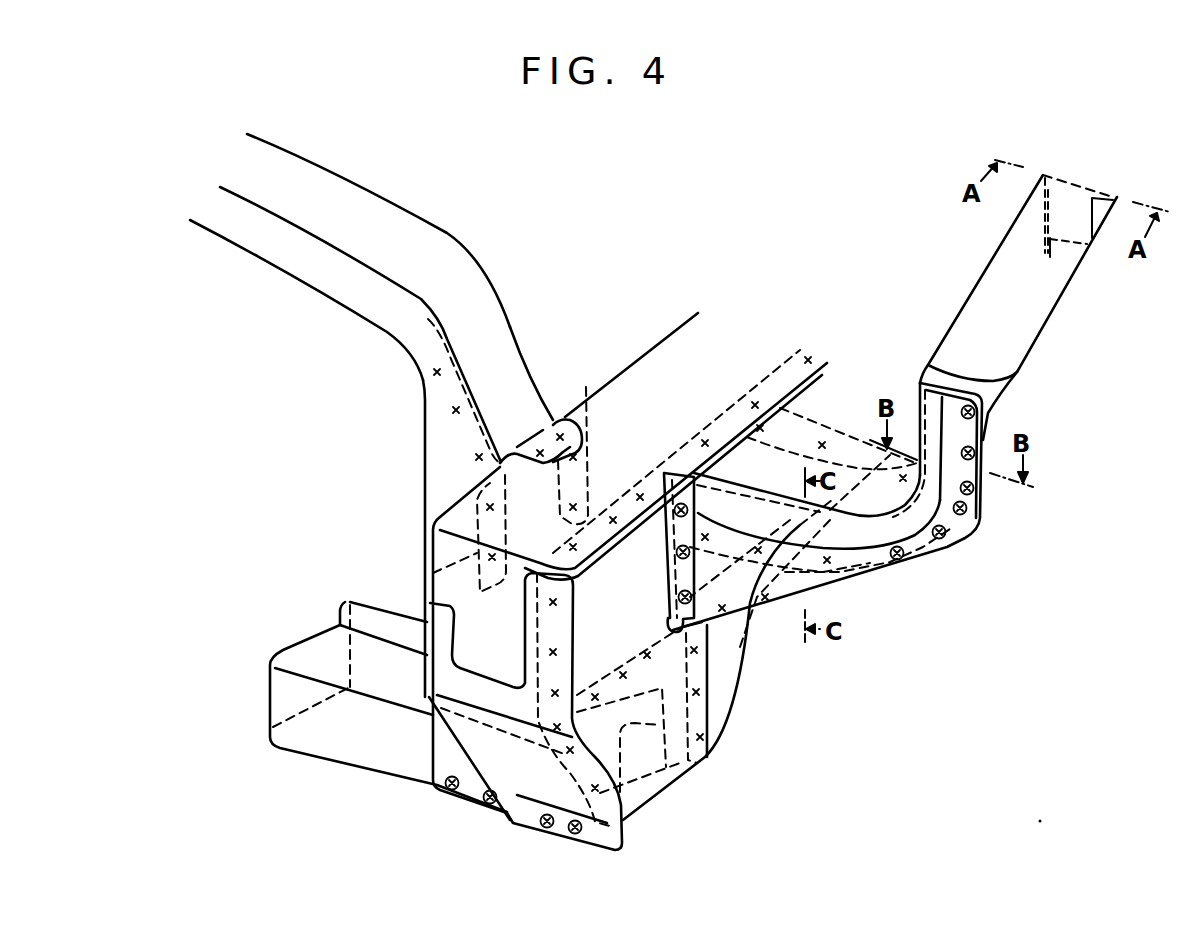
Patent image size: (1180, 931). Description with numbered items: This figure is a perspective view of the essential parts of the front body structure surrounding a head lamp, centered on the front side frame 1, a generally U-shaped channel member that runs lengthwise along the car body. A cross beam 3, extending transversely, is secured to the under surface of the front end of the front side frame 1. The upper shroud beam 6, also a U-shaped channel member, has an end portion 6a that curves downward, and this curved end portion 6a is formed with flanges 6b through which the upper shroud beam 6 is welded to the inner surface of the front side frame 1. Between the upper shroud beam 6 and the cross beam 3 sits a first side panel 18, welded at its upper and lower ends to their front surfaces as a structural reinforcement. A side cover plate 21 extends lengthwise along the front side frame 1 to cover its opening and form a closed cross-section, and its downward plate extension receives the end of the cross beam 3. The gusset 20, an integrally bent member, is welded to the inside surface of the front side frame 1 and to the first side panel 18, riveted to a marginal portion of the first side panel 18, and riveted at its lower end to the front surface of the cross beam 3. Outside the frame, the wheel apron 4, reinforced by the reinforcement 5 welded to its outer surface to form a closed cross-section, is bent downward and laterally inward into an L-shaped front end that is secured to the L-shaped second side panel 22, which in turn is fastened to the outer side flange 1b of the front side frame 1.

The front side frame 1 is at (673, 337).
The outer side flange 1b is at (699, 591).
The cross beam 3 is at (340, 752).
The wheel apron 4 is at (983, 283).
The reinforcement 5 is at (1081, 250).
The upper shroud beam 6 is at (500, 303).
The end portion 6a is at (517, 350).
The flanges 6b is at (557, 425).
The first side panel 18 is at (433, 495).
The gusset 20 is at (495, 758).
The side cover plate 21 is at (685, 760).
The second side panel 22 is at (960, 523).